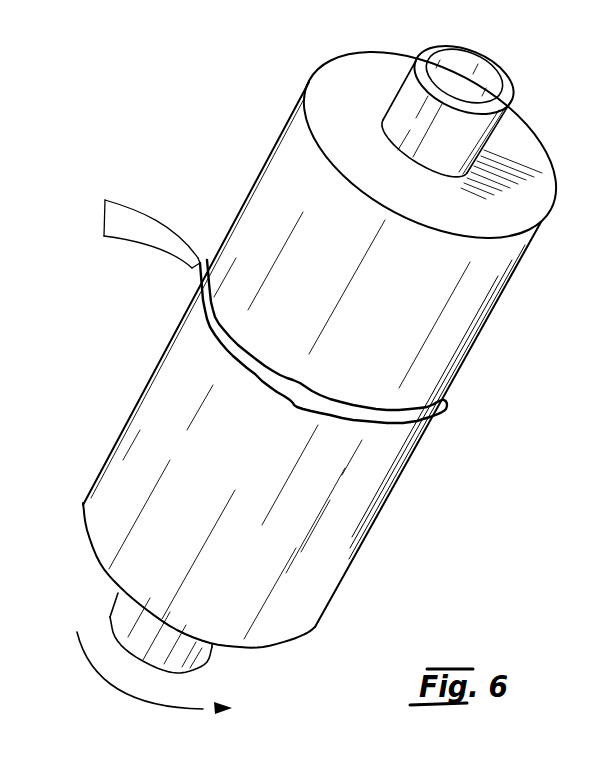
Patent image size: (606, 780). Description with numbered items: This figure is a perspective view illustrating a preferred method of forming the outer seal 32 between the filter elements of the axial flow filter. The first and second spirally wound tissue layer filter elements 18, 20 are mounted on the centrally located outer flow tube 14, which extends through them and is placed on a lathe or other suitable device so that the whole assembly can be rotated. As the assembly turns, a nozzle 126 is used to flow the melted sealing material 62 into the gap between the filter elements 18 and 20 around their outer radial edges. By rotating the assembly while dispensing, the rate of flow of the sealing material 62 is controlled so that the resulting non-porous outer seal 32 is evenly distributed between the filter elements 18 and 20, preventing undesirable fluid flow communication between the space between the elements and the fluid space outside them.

The outer flow tube 14 is at (420, 99).
The first spirally wound tissue layer filter element 18 is at (350, 478).
The second spirally wound tissue layer filter element 20 is at (290, 178).
The outer seal 32 is at (224, 341).
The sealing material 62 is at (456, 411).
The nozzle 126 is at (120, 216).